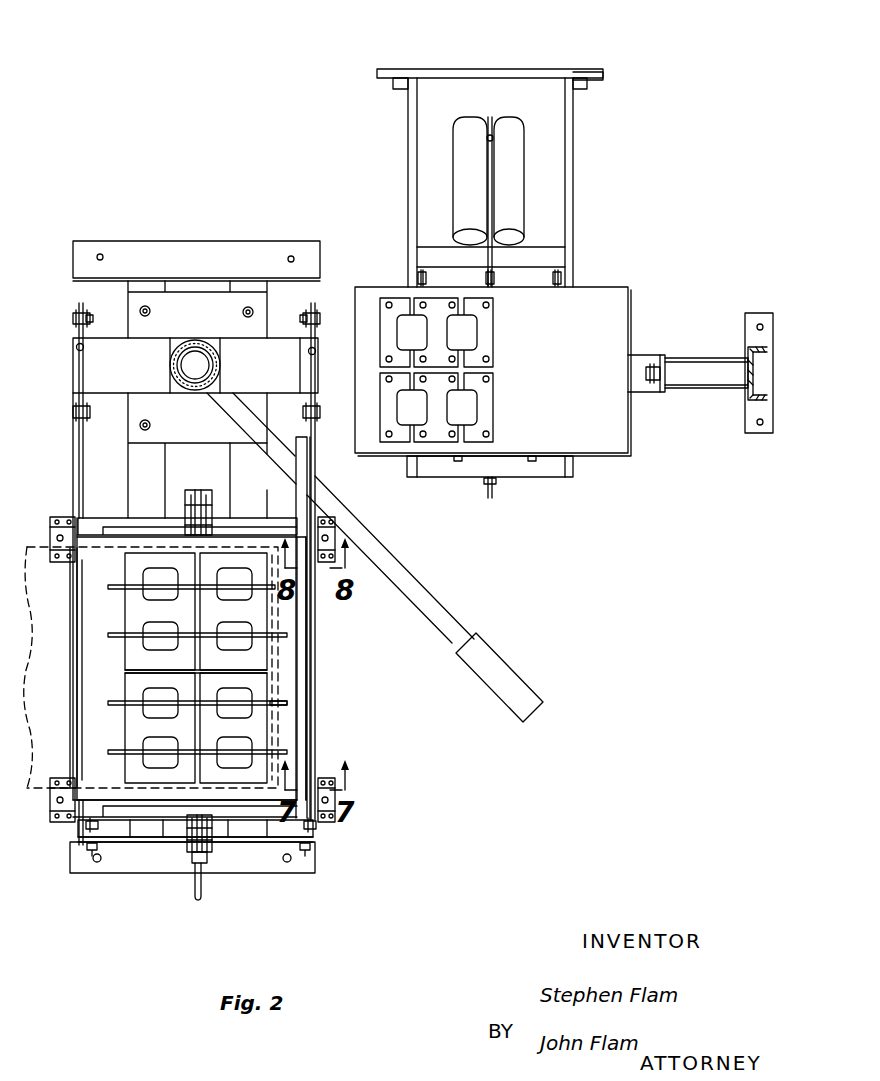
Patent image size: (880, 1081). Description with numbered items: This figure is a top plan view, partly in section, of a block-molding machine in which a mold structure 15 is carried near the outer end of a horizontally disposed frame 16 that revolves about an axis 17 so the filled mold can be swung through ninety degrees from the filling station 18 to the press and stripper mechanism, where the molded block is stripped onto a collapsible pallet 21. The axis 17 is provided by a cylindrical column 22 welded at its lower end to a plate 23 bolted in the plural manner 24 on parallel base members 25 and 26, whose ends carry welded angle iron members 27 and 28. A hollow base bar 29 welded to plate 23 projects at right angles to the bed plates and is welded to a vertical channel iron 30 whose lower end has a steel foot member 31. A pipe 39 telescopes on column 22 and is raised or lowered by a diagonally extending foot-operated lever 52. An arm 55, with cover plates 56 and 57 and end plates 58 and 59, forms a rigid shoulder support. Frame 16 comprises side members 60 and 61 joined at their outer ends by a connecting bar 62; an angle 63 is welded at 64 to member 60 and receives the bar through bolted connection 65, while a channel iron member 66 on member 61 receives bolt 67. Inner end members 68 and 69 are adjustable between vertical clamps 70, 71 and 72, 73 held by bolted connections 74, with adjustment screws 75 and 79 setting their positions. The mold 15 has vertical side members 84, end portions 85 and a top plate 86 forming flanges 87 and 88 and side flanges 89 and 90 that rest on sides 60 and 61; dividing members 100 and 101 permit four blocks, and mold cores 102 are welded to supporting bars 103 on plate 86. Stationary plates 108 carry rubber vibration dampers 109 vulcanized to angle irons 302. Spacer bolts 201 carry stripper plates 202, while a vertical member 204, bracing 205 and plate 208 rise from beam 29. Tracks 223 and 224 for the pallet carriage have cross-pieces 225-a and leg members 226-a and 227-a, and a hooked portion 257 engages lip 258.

The mold structure 15 is at (258, 661).
The horizontally disposed frame 16 is at (304, 698).
The axis 17 is at (198, 362).
The filling station 18 is at (151, 667).
The collapsible pallet 21 is at (495, 159).
The cylindrical post or column 22 is at (170, 364).
The plate 23 is at (203, 297).
The bolted connections 24 is at (152, 426).
The base member 25 is at (136, 468).
The base member 26 is at (238, 470).
The angle iron member 27 is at (270, 244).
The angle iron member 28 is at (272, 871).
The hollow base bar 29 is at (725, 381).
The vertically disposed channel iron 30 is at (757, 375).
The steel foot member 31 is at (761, 313).
The pipe 39 is at (222, 364).
The foot-operated lever or pedal 52 is at (443, 626).
The arm 55 is at (181, 346).
The cover plate 56 is at (82, 378).
The cover plate 57 is at (316, 349).
The end plate 58 is at (93, 321).
The end plate 59 is at (300, 322).
The side member 60 is at (80, 490).
The side member 61 is at (316, 742).
The connecting bar 62 is at (152, 832).
The angle 63 is at (76, 844).
The weld 64 is at (84, 826).
The bolted connection 65 is at (91, 852).
The channel iron member 66 is at (316, 832).
The bolt 67 is at (310, 846).
The end member 68 is at (75, 448).
The end member 69 is at (318, 432).
The vertical clamp 70 is at (77, 312).
The vertical clamp 71 is at (74, 414).
The vertical clamp 72 is at (313, 312).
The vertical clamp 73 is at (314, 411).
The bolted connections 74 is at (72, 318).
The adjustment screw 75 is at (78, 351).
The adjustment screw 79 is at (314, 356).
The vertical side member 84 is at (110, 645).
The end portion 85 is at (250, 545).
The top or mold-supporting plate 86 is at (112, 683).
The flange 87 is at (150, 535).
The flange 88 is at (152, 802).
The side flange 89 is at (92, 606).
The side flange 90 is at (298, 752).
The dividing member 100 is at (190, 613).
The dividing member 101 is at (137, 664).
The mold core 102 is at (250, 695).
The mold core supporting bar 103 is at (284, 707).
The metal plate 108 is at (115, 520).
The rubber vibration damper 109 is at (333, 548).
The spacer bolt 201 is at (489, 306).
The stripper plate 202 is at (490, 412).
The vertically disposed member 204 is at (662, 358).
The bracing 205 is at (705, 357).
The plate 208 is at (669, 396).
The frame track member 223 is at (408, 148).
The frame track member 224 is at (574, 157).
The cross-piece 225-a is at (394, 85).
The leg member 226-a is at (402, 69).
The leg member 227-a is at (578, 71).
The hooked portion 257 is at (494, 490).
The lip 258 is at (484, 482).
The angle iron 302 is at (72, 568).